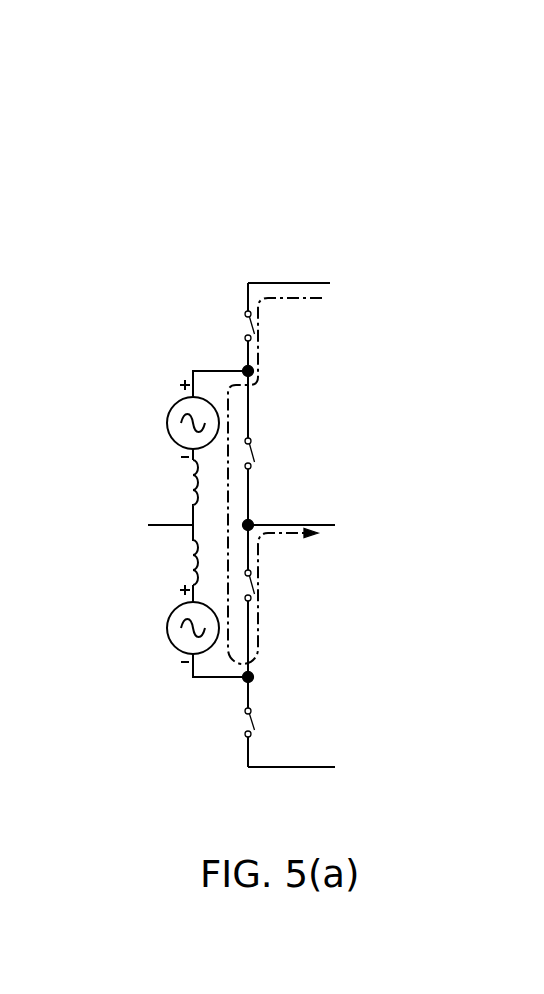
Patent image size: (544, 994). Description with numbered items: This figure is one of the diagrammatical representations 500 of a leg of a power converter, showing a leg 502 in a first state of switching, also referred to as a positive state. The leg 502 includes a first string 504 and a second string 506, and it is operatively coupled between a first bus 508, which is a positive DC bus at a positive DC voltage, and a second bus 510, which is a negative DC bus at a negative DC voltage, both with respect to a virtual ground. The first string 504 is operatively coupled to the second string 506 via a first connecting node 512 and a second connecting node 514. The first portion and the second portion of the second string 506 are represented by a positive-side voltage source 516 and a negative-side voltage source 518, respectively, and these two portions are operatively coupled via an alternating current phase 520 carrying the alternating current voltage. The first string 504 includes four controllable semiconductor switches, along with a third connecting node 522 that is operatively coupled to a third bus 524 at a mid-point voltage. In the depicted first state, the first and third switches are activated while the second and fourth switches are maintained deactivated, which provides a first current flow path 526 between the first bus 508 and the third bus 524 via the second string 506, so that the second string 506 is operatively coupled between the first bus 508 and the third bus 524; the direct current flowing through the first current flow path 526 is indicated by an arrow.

The diagrammatical representations 500 is at (172, 85).
The leg 502 is at (330, 205).
The first string 504 is at (248, 752).
The second string 506 is at (195, 369).
The first bus 508 is at (268, 283).
The second bus 510 is at (322, 767).
The first connecting node 512 is at (245, 369).
The second connecting node 514 is at (253, 675).
The voltage source Vp 516 is at (178, 400).
The voltage source Vn 518 is at (178, 605).
The alternating current phase 520 is at (170, 522).
The third connecting node 522 is at (285, 508).
The third bus 524 is at (322, 524).
The first current flow path 526 is at (230, 410).